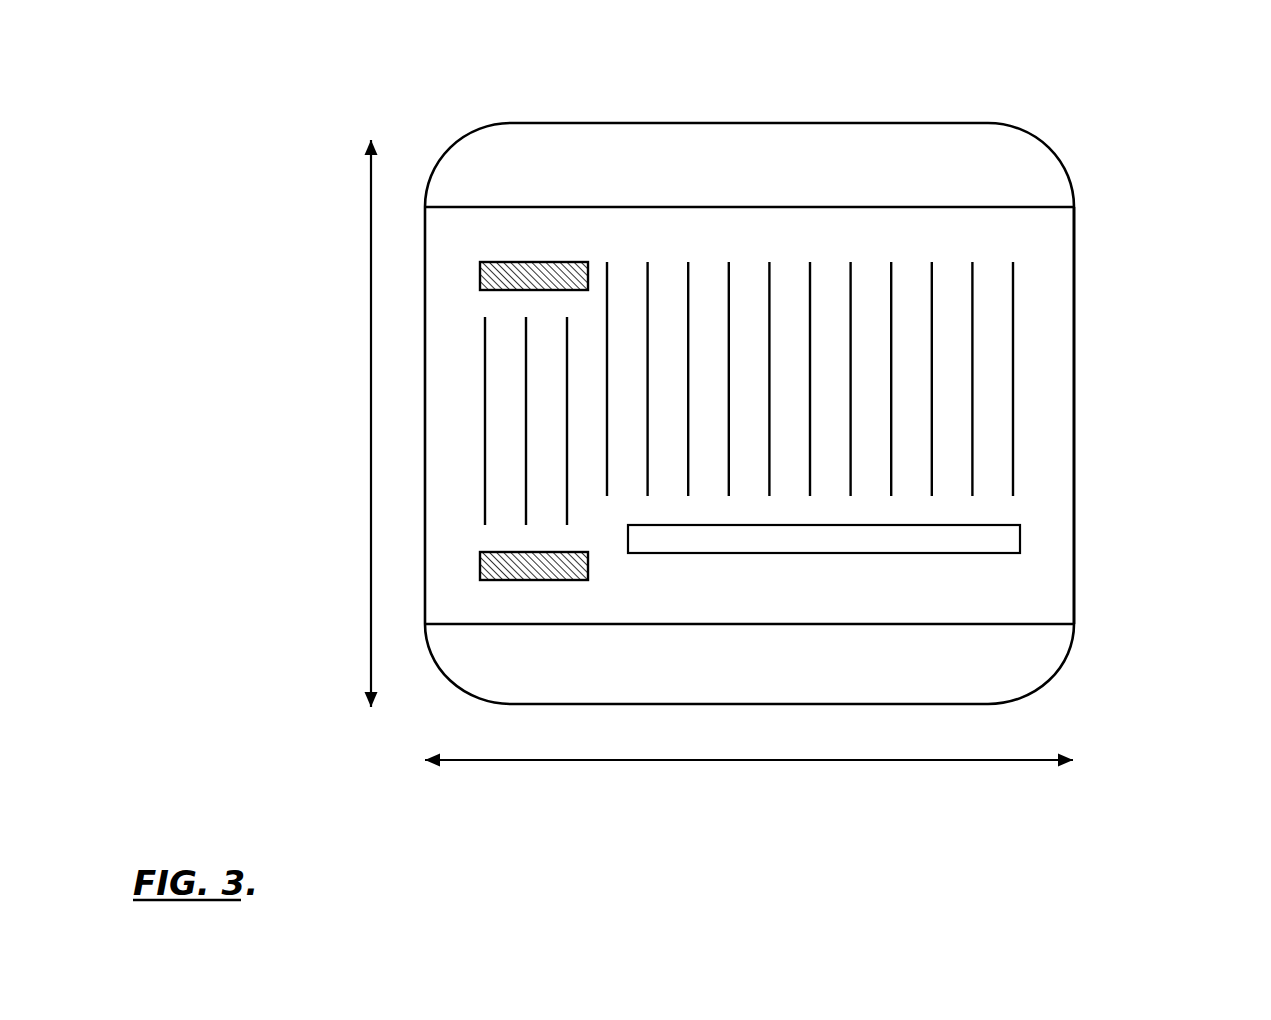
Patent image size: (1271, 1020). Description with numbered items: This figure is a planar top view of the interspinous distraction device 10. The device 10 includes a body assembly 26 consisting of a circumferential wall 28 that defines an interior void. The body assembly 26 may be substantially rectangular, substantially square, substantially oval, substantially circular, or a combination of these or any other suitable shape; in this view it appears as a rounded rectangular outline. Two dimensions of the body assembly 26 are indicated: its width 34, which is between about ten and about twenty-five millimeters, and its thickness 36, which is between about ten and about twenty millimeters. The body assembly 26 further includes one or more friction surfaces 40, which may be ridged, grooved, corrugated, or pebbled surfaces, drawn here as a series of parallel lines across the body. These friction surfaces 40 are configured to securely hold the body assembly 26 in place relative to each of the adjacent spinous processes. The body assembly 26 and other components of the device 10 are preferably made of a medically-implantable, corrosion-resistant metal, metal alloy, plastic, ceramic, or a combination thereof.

The interspinous distraction device 10 is at (1063, 153).
The body assembly 26 is at (1087, 277).
The circumferential wall 28 is at (1074, 423).
The friction surfaces 40 is at (993, 260).
The width 34 is at (760, 802).
The thickness 36 is at (357, 436).